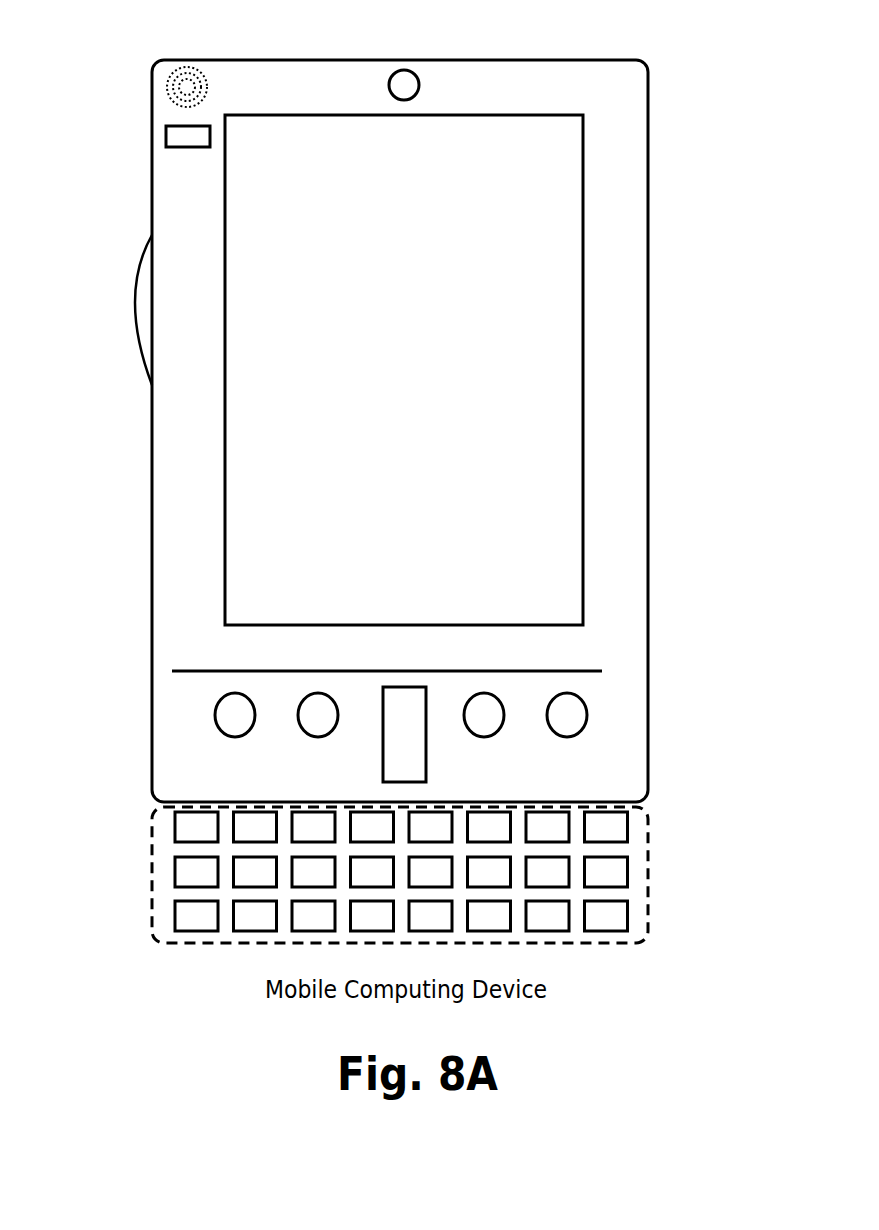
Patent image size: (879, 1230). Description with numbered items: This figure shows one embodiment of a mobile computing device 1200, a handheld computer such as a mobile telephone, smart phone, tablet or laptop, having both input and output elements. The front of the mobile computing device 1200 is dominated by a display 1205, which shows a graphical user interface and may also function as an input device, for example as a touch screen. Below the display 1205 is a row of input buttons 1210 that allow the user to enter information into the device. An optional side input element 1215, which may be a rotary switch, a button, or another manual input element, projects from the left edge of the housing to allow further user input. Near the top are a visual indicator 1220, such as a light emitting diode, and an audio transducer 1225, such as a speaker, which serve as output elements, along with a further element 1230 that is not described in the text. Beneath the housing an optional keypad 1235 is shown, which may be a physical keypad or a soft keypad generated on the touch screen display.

The mobile computing device 1200 is at (648, 88).
The display 1205 is at (252, 463).
The input buttons 1210 is at (383, 743).
The side input element 1215 is at (130, 295).
The visual indicator 1220 is at (166, 131).
The audio transducer 1225 is at (168, 79).
The camera 1230 is at (398, 70).
The keypad 1235 is at (165, 874).